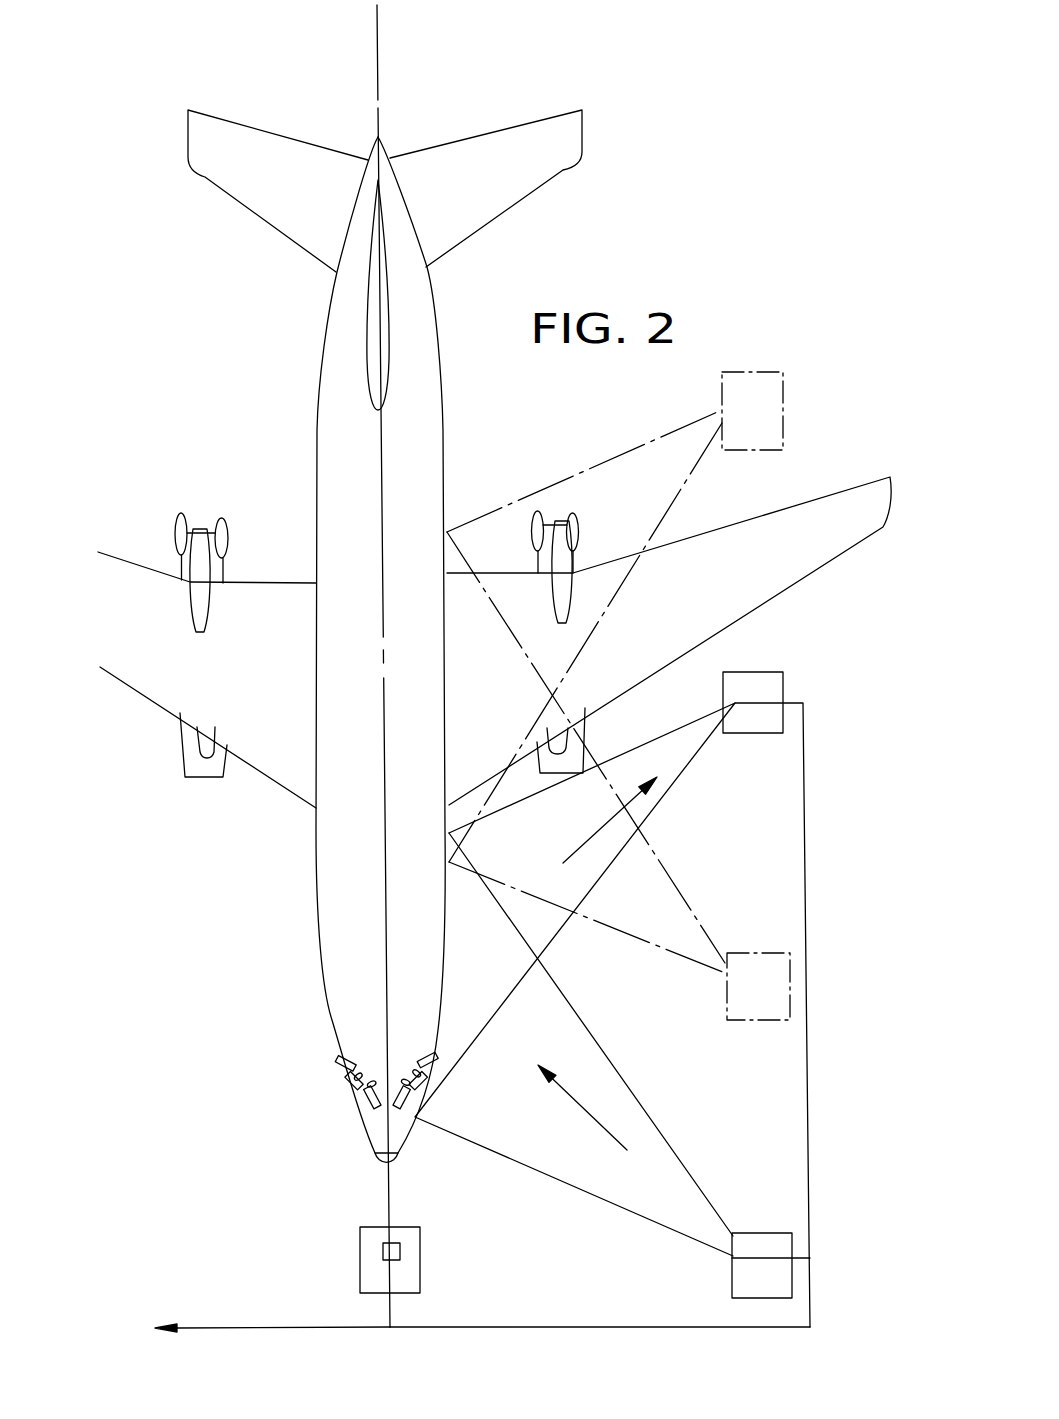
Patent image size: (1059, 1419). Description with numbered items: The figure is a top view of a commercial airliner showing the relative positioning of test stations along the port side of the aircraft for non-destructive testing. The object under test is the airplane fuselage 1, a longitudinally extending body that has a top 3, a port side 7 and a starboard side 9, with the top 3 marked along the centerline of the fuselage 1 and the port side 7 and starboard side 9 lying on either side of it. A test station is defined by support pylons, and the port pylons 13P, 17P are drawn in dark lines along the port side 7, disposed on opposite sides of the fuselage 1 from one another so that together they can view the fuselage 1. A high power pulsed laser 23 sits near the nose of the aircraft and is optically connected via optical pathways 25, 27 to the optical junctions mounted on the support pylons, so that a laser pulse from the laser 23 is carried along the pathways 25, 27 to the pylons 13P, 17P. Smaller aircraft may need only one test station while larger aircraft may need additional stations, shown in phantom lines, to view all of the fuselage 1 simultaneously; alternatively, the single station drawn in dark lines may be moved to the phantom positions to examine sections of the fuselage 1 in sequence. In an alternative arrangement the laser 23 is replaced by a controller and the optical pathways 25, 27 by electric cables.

The airplane fuselage 1 is at (316, 860).
The top 3 is at (418, 663).
The port side 7 is at (447, 694).
The starboard side 9 is at (316, 688).
The support pylon 13P is at (760, 1233).
The support pylon 17P is at (763, 672).
The high power pulsed laser 23 is at (420, 1258).
The optical pathway 25 is at (280, 1328).
The optical pathway 27 is at (535, 1327).